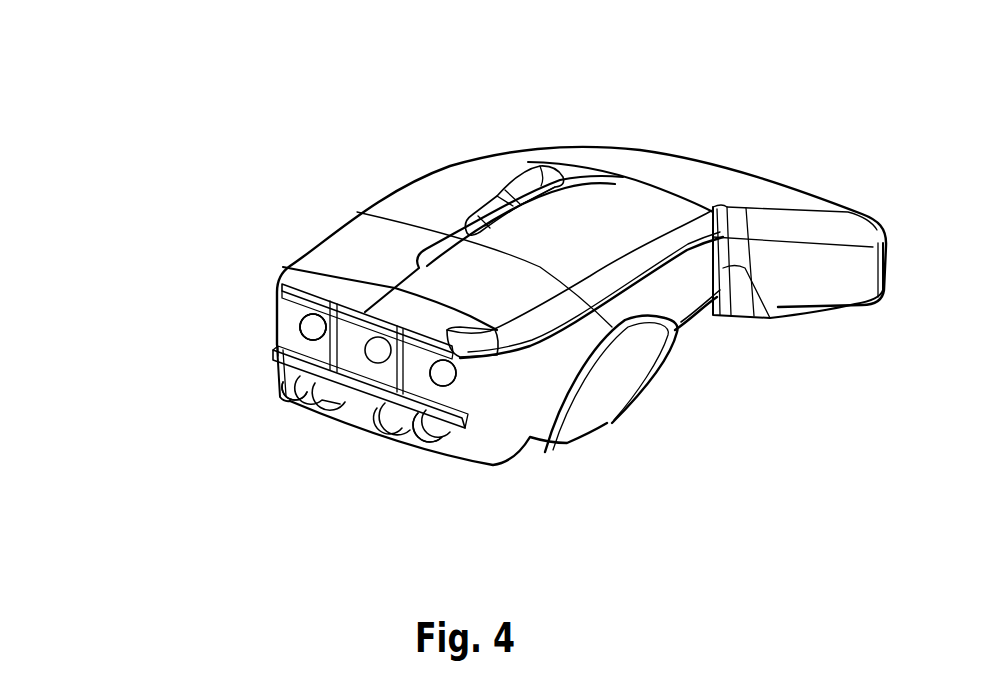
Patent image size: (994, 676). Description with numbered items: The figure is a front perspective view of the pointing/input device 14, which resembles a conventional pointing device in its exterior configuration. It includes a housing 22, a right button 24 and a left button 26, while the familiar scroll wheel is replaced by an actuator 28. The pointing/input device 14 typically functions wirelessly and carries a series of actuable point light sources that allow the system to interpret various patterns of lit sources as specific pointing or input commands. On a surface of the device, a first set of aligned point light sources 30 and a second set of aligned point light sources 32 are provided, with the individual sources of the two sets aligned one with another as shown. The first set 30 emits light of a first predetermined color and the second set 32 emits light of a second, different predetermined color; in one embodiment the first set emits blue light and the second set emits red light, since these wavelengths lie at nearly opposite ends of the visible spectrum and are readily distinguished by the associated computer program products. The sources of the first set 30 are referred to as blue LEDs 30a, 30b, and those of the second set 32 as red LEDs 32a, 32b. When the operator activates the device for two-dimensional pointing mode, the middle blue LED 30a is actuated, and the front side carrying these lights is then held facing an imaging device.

The pointing/input device 14 is at (731, 163).
The housing 22 is at (805, 280).
The right button 24 is at (375, 243).
The left button 26 is at (508, 237).
The actuator 28 is at (527, 193).
The first set of aligned point light sources 30 is at (440, 380).
The blue LED 30a is at (317, 328).
The blue LED 30b is at (310, 322).
The second set of aligned point light sources 32 is at (437, 434).
The red LED 32a is at (293, 398).
The red LED 32b is at (433, 430).